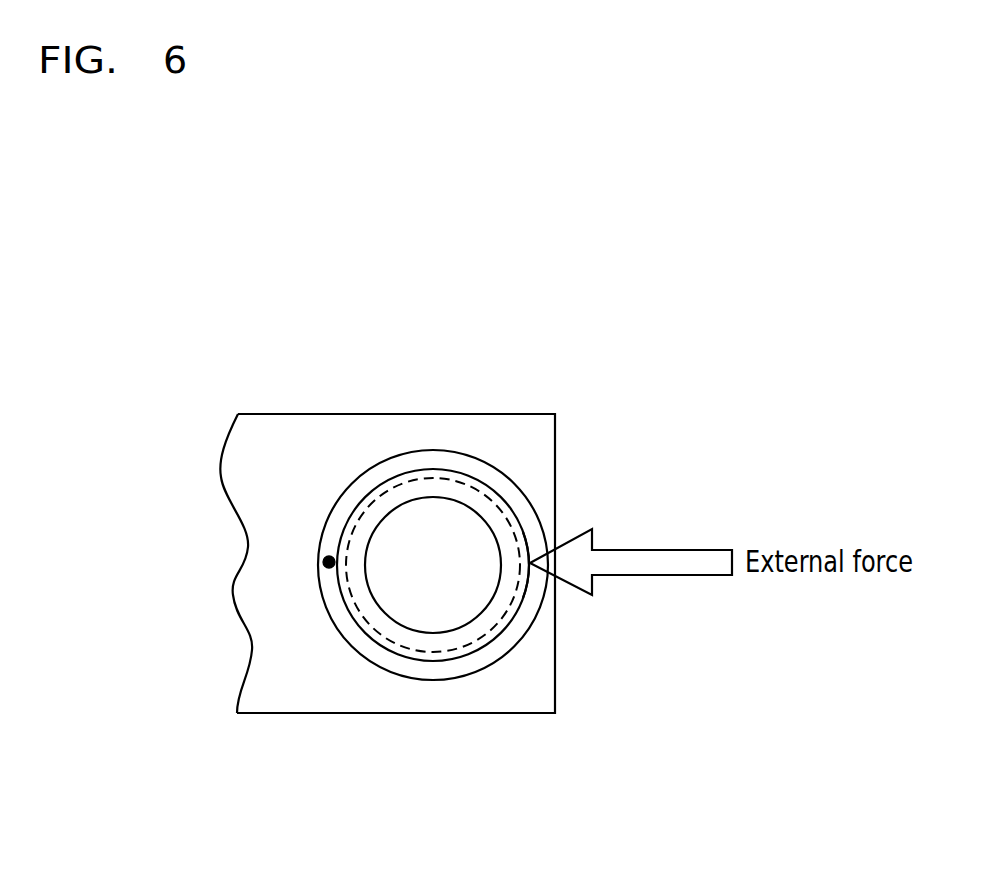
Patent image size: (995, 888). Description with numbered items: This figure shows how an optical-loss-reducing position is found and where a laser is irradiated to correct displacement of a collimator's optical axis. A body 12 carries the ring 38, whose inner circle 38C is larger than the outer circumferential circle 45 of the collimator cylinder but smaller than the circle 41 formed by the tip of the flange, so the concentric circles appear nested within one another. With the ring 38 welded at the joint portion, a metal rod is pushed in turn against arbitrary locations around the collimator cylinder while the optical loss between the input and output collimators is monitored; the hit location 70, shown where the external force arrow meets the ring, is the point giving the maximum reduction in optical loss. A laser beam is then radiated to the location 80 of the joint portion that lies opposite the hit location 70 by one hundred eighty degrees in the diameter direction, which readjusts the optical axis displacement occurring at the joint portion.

The housing body 12 is at (533, 448).
The ring 38 is at (532, 507).
The inner circle 38C is at (395, 644).
The circle formed by the tip of the flange 41 is at (513, 620).
The outer circumferential circle 45 is at (458, 630).
The hit location 70 is at (533, 567).
The location 80 is at (329, 560).